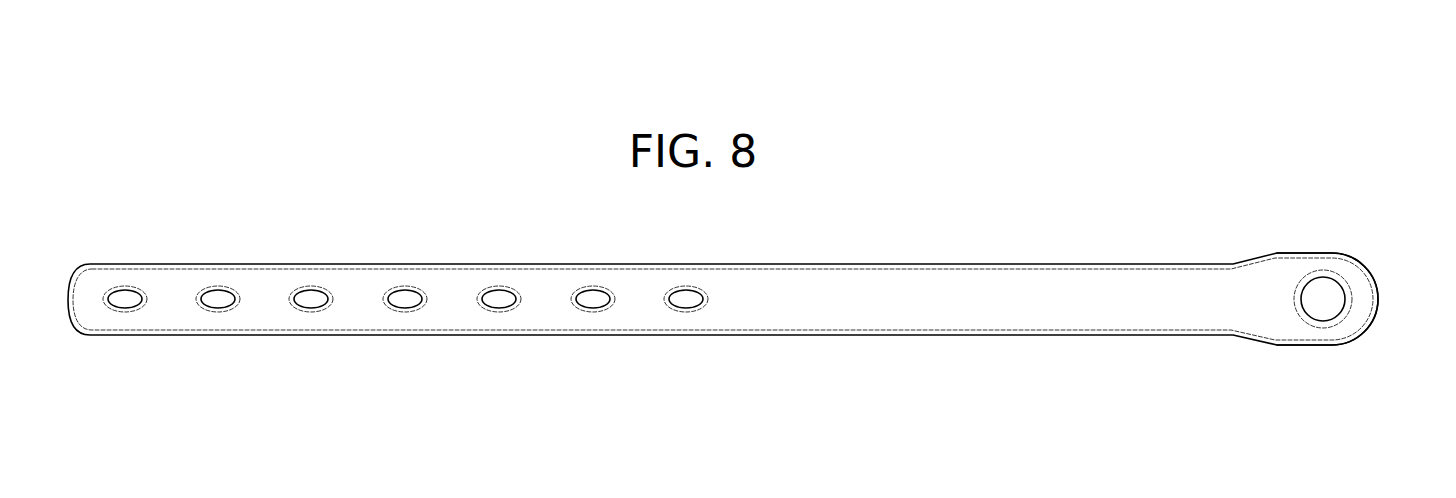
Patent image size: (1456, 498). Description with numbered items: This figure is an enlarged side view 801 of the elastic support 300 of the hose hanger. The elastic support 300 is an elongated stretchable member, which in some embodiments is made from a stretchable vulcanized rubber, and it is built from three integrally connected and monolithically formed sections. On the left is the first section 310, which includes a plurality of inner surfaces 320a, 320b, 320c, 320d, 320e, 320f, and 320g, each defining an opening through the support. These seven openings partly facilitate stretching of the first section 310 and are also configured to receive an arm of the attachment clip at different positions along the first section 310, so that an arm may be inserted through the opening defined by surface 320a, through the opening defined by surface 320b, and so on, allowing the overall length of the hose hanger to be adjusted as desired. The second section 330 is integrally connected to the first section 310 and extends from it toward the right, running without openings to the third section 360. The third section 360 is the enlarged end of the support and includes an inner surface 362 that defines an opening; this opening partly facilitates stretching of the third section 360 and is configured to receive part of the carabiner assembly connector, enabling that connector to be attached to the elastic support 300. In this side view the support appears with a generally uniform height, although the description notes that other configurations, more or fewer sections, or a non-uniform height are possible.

The elastic support 300 is at (345, 436).
The first section 310 is at (362, 264).
The inner surface 320a is at (124, 298).
The inner surface 320b is at (217, 298).
The inner surface 320c is at (310, 298).
The inner surface 320d is at (404, 298).
The inner surface 320e is at (498, 298).
The inner surface 320f is at (592, 298).
The inner surface 320g is at (685, 298).
The second section 330 is at (1000, 263).
The third section 360 is at (1304, 252).
The inner surface 362 is at (1322, 300).
The enlarged side view 801 is at (1368, 101).